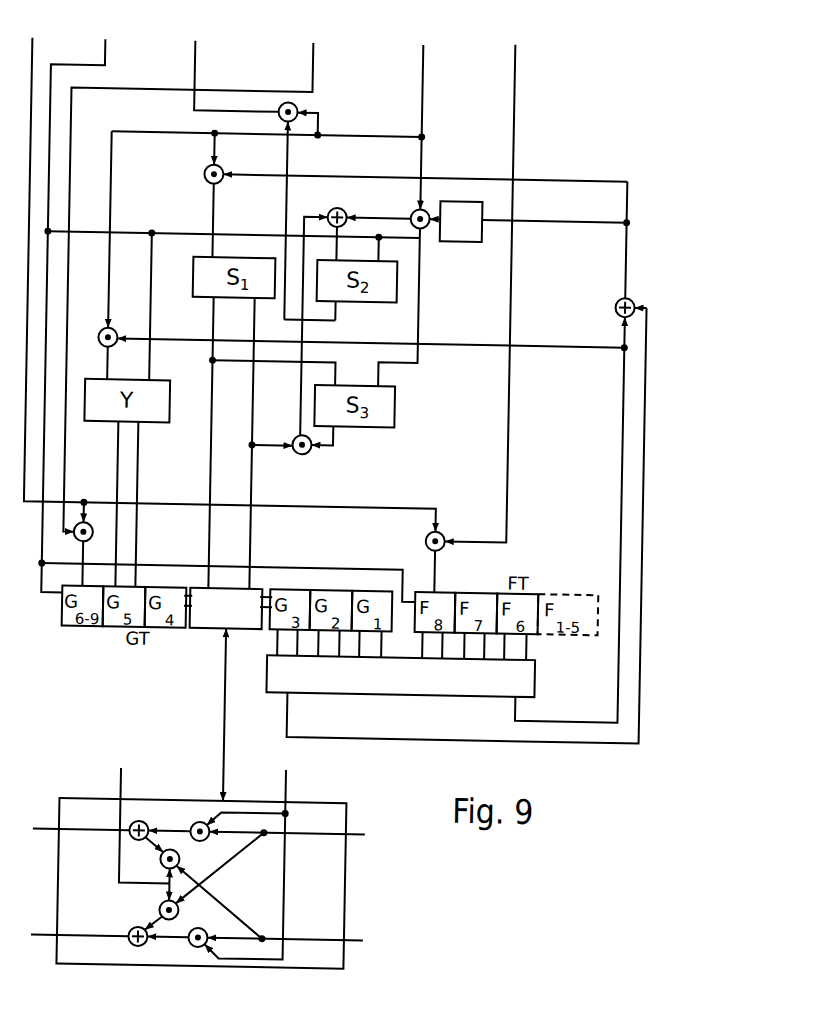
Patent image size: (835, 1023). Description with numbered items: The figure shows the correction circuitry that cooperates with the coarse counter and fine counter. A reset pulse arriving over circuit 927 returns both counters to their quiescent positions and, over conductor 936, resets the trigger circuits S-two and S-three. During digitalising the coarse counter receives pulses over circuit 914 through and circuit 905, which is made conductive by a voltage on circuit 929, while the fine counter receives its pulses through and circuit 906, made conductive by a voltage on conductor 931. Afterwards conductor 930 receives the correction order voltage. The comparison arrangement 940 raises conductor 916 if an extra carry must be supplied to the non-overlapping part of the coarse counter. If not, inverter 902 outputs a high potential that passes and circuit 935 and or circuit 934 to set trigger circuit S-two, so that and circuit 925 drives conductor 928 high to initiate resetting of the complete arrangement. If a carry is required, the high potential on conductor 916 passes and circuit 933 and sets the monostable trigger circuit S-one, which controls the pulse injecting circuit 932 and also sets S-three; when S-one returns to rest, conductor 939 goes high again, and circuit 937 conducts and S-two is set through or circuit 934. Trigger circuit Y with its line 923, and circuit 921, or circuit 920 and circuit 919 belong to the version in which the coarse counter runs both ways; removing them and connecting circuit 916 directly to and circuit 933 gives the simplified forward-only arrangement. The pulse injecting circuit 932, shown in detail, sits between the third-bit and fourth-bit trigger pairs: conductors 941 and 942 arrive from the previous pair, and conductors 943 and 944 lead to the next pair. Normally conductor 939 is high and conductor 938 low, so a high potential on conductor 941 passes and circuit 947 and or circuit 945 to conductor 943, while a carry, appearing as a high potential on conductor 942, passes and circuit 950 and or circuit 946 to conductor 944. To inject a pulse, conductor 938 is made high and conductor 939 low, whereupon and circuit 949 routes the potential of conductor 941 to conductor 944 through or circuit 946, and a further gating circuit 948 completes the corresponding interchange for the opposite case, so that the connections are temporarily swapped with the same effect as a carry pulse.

The inverter 902 is at (528, 223).
The and circuit 905 is at (79, 546).
The and circuit 906 is at (416, 560).
The circuit 914 is at (233, 285).
The conductor 916 is at (642, 431).
The circuit 919 is at (620, 399).
The or circuit 920 is at (614, 266).
The and circuit 921 is at (350, 348).
The output line of Y 923 is at (118, 476).
The and circuit 925 is at (301, 204).
The circuit 927 is at (232, 320).
The conductor 928 is at (237, 75).
The circuit 929 is at (202, 288).
The conductor 930 is at (438, 126).
The conductor 931 is at (497, 293).
The pulse injecting circuit 932 is at (203, 788).
The and circuit 933 is at (415, 206).
The or circuit 934 is at (326, 253).
The and circuit 935 is at (387, 286).
The conductor 936 is at (232, 297).
The and circuit 937 is at (311, 450).
The conductor 938 is at (210, 599).
The conductor 939 is at (265, 628).
The comparison arrangement 940 is at (400, 676).
The conductor 941 is at (270, 868).
The conductor 942 is at (270, 915).
The conductor 943 is at (81, 838).
The conductor 944 is at (80, 945).
The or circuit 945 is at (146, 825).
The or circuit 946 is at (140, 946).
The and circuit 947 is at (193, 838).
The multiplier 948 is at (153, 860).
The and circuit 949 is at (152, 913).
The and circuit 950 is at (181, 926).